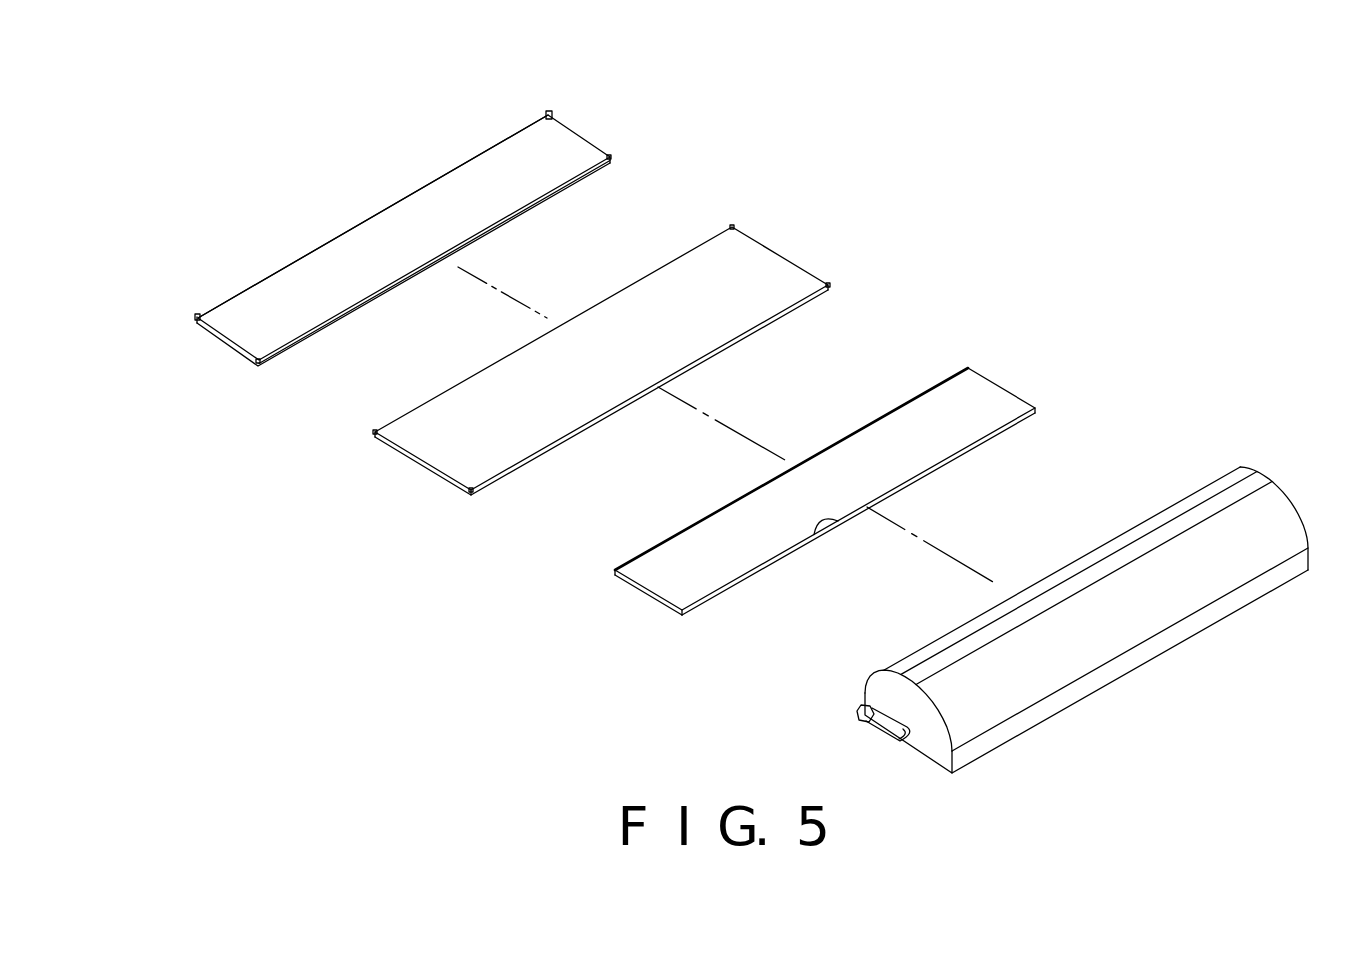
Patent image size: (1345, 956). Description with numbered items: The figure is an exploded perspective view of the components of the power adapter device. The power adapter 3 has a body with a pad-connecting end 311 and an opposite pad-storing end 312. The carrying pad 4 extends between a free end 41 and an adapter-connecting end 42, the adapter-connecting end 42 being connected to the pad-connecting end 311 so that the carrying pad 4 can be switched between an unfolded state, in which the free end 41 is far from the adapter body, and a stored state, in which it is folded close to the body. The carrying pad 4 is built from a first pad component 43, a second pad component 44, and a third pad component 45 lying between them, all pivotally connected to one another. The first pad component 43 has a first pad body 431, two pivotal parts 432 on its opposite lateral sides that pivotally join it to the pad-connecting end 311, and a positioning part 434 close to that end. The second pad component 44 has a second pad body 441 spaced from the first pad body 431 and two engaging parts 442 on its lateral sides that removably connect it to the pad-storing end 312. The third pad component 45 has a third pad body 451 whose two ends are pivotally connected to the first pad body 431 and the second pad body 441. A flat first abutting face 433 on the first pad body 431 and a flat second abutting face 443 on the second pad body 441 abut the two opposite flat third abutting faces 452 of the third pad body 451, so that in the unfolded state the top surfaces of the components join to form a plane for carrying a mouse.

The power adapter 3 is at (1297, 476).
The pad-connecting end 311 is at (858, 721).
The pad-storing end 312 is at (1207, 629).
The carrying pad 4 is at (870, 152).
The free end 41 is at (371, 216).
The adapter-connecting end 42 is at (921, 479).
The first pad component 43 is at (1014, 386).
The first pad body 431 is at (928, 407).
The pivotal parts 432 is at (677, 613).
The first abutting face 433 is at (812, 455).
The positioning part 434 is at (835, 517).
The second pad component 44 is at (597, 134).
The second pad body 441 is at (462, 178).
The engaging parts 442 is at (551, 112).
The second abutting face 443 is at (383, 292).
The third pad component 45 is at (792, 260).
The third pad body 451 is at (760, 262).
The third abutting faces 452 is at (590, 310).